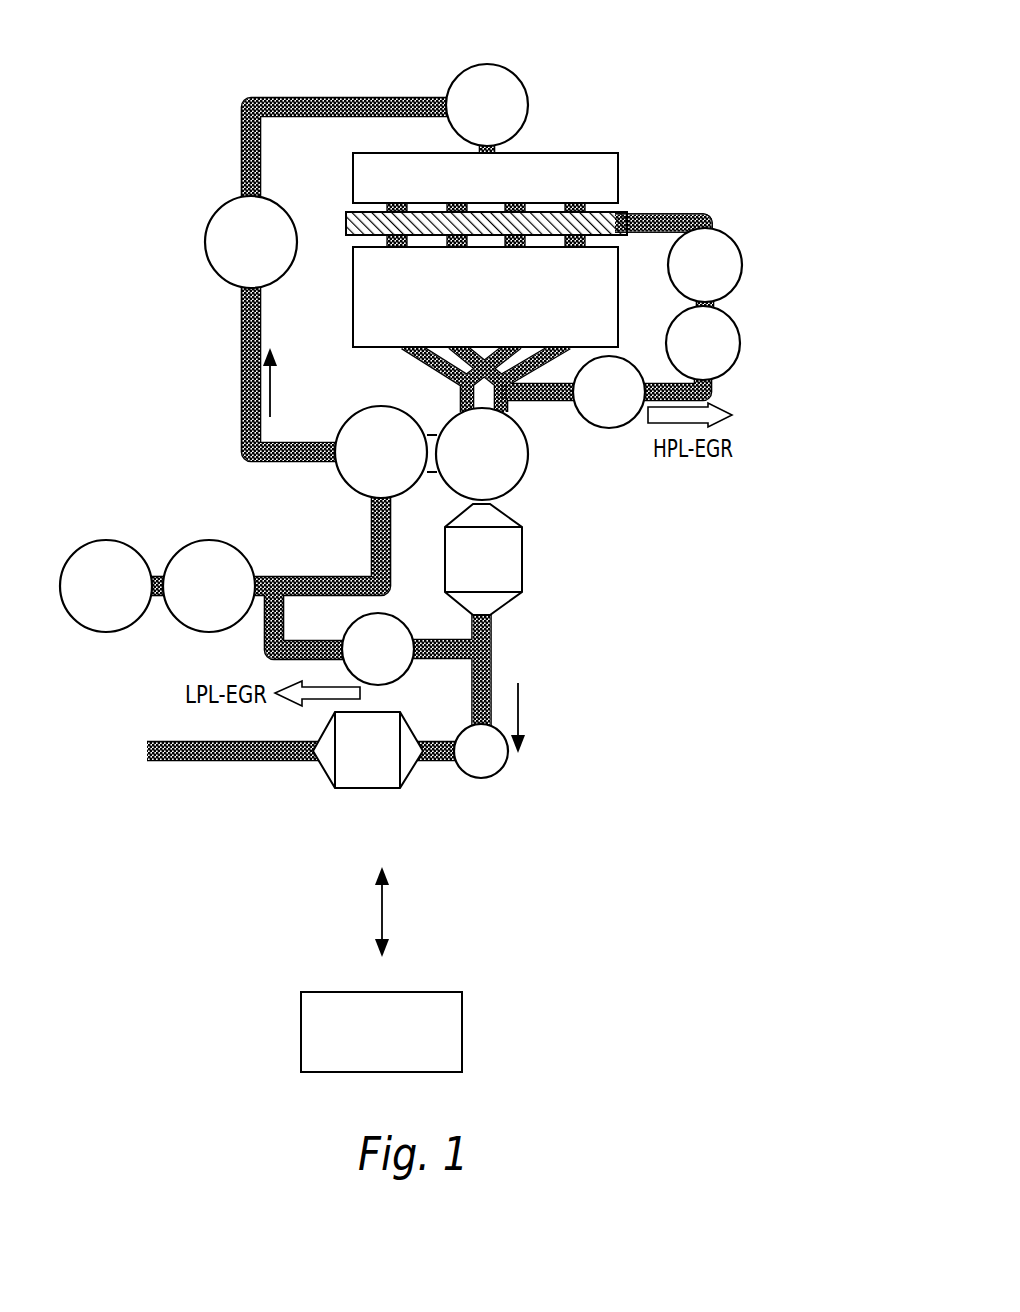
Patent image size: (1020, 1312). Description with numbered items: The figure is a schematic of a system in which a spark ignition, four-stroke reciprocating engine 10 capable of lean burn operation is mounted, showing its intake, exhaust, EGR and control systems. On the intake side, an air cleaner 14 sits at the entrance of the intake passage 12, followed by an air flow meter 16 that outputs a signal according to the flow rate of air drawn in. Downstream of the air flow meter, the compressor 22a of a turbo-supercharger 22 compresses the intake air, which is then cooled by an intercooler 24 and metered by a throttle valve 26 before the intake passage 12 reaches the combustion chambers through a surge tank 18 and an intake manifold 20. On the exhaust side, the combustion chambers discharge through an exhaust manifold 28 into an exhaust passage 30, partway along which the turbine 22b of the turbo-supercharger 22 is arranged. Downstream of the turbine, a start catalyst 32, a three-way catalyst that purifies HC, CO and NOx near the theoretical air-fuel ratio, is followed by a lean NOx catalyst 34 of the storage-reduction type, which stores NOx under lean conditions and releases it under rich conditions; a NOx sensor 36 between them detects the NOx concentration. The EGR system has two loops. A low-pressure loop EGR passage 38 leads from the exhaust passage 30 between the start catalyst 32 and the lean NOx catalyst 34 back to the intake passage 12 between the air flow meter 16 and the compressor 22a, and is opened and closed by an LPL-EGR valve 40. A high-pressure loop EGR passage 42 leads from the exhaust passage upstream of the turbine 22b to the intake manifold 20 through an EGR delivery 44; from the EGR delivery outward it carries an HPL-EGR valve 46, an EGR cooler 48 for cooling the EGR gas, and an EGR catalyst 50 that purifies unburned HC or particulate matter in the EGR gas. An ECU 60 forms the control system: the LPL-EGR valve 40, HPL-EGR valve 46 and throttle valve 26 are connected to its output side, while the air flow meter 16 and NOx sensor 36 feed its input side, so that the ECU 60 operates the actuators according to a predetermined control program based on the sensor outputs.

The engine 10 is at (468, 244).
The intake passage 12 is at (363, 98).
The air cleaner 14 is at (109, 538).
The air flow meter 16 is at (209, 538).
The surge tank 18 is at (553, 153).
The intake manifold 20 is at (576, 211).
The turbo-supercharger 22 is at (434, 480).
The compressor 22a is at (347, 478).
The turbine 22b is at (521, 481).
The intercooler 24 is at (205, 244).
The throttle valve 26 is at (490, 62).
The exhaust manifold 28 is at (438, 366).
The exhaust passage 30 is at (247, 761).
The start catalyst (S/C) 32 is at (523, 560).
The lean NOx catalyst 34 is at (398, 712).
The NOx sensor 36 is at (485, 779).
The LPL-EGR passage 38 is at (437, 641).
The LPL-EGR valve 40 is at (388, 613).
The HPL-EGR passage 42 is at (700, 213).
The EGR delivery 44 is at (624, 214).
The HPL-EGR valve 46 is at (743, 266).
The EGR cooler 48 is at (741, 343).
The EGR catalyst 50 is at (612, 429).
The ECU (electronic control unit) 60 is at (434, 992).